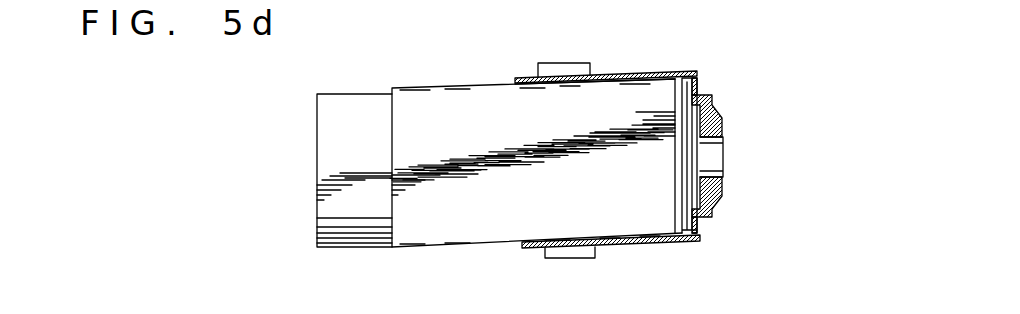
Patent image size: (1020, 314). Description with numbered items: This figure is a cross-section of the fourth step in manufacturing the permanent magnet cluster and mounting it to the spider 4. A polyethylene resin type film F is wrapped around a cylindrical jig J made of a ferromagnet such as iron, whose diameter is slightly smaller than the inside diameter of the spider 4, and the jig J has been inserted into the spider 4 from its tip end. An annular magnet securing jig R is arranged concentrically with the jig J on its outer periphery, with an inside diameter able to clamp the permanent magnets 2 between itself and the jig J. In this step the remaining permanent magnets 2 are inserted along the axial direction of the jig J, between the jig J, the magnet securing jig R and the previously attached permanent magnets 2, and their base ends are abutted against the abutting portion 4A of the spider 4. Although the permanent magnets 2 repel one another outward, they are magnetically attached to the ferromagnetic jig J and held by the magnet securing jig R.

The permanent magnet 2 is at (527, 76).
The spider 4 is at (697, 74).
The abutting portion 4A is at (608, 72).
The magnet securing jig R is at (578, 63).
The jig J is at (316, 165).
The film F is at (452, 248).